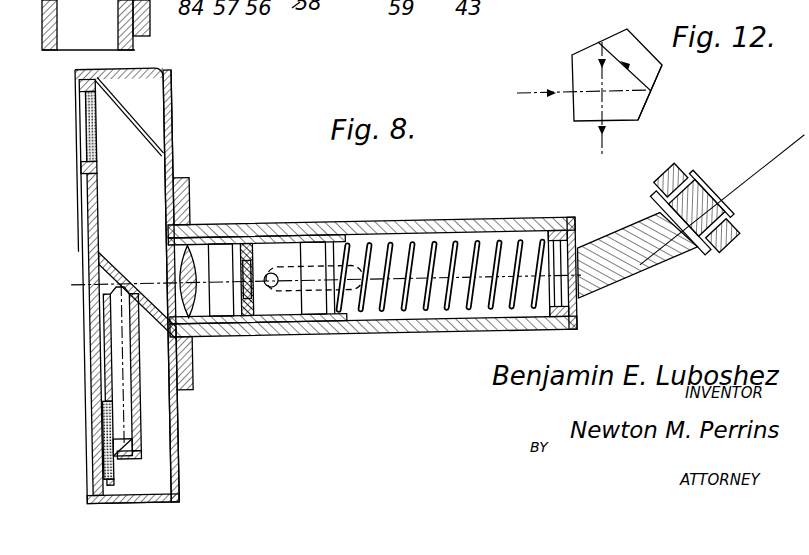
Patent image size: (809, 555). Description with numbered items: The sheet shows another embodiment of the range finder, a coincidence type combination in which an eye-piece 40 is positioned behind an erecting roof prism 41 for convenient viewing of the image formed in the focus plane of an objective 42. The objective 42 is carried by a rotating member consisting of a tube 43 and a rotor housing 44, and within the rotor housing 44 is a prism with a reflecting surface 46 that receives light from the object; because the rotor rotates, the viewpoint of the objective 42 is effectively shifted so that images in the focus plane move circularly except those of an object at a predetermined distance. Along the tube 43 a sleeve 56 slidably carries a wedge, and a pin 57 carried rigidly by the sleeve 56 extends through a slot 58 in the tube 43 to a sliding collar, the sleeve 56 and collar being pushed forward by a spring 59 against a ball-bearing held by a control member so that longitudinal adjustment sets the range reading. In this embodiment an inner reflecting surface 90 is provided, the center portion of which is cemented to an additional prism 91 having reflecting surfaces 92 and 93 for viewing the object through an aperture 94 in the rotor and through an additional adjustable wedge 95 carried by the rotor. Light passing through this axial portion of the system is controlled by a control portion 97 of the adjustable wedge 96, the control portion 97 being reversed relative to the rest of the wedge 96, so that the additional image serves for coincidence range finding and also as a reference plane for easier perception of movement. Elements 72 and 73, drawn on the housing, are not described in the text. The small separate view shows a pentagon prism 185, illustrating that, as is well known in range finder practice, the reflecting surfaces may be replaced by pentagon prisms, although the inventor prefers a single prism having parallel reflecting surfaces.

In FIG. 8, the eye-piece 40 is at (722, 213).
In FIG. 8, the erecting roof prism 41 is at (672, 267).
In FIG. 8, the objective 42 is at (184, 252).
In FIG. 8, the tube 43 is at (383, 338).
In FIG. 8, the rotor housing 44 is at (174, 126).
In FIG. 8, the reflecting surface 46 is at (143, 127).
In FIG. 8, the sleeve 56 is at (312, 325).
In FIG. 8, the pin 57 is at (271, 275).
In FIG. 8, the slot 58 is at (309, 247).
In FIG. 8, the spring 59 is at (430, 247).
In FIG. 8, the scale element 72 is at (93, 103).
In FIG. 8, the mounting block 73 is at (88, 166).
In FIG. 8, the inner reflecting surface 90 is at (114, 264).
In FIG. 8, the additional prism 91 is at (116, 342).
In FIG. 8, the reflecting surface 92 is at (116, 283).
In FIG. 8, the reflecting surface 93 is at (121, 452).
In FIG. 8, the aperture 94 is at (104, 440).
In FIG. 8, the additional adjustable wedge 95 is at (112, 455).
In FIG. 8, the adjustable wedge 96 is at (242, 246).
In FIG. 8, the control portion 97 is at (245, 292).
In FIG. 12, the pentaprism 185 is at (637, 103).